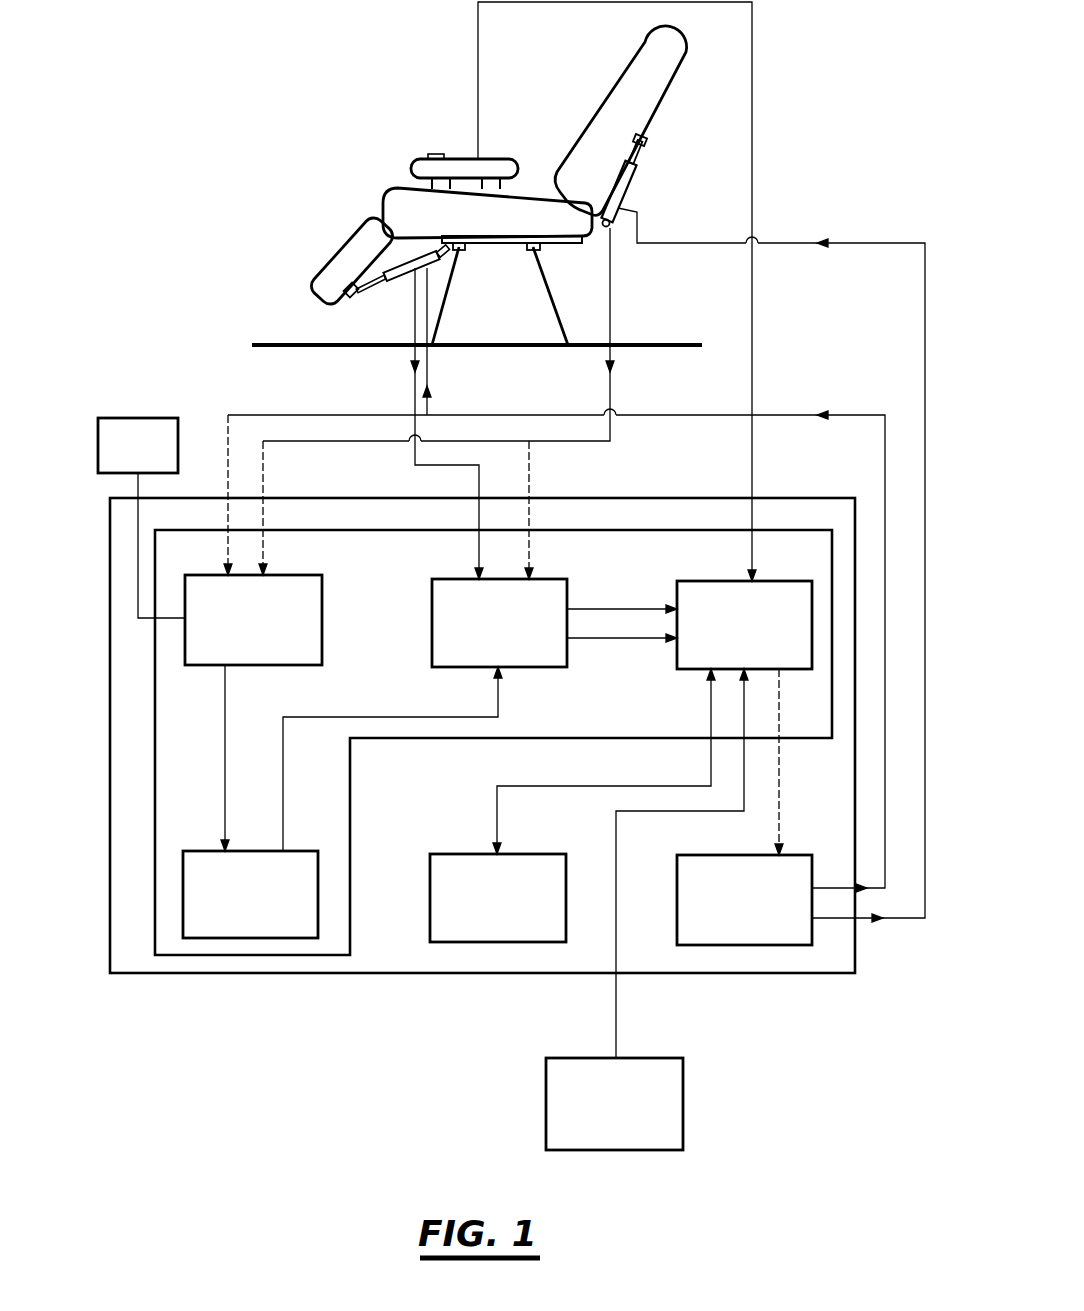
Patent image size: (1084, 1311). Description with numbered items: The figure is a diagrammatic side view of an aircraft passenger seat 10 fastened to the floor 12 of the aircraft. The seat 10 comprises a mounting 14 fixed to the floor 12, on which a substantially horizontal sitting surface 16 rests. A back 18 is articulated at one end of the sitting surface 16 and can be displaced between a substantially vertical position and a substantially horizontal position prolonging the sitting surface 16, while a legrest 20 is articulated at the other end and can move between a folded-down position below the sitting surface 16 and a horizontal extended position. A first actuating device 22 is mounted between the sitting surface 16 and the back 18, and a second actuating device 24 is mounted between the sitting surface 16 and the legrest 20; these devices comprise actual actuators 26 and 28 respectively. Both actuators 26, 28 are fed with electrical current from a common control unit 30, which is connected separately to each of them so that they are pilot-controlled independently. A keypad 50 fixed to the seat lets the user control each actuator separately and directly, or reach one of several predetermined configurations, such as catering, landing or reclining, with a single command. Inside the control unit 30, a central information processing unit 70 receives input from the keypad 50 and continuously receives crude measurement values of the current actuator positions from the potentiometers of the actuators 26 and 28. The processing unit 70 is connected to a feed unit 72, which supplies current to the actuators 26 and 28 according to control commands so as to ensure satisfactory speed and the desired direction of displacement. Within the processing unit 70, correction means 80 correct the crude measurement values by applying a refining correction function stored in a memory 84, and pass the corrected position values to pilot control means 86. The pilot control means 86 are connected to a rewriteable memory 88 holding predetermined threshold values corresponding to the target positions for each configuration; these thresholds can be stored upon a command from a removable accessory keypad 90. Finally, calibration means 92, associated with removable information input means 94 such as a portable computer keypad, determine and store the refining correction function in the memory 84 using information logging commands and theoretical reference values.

The seat 10 is at (355, 175).
The floor 12 is at (290, 340).
The mounting 14 is at (497, 326).
The sitting surface 16 is at (400, 203).
The back 18 is at (651, 64).
The legrest 20 is at (347, 253).
The first actuating device 22 is at (624, 237).
The second actuating device 24 is at (376, 305).
The actuator 26 is at (636, 180).
The actuator 28 is at (396, 284).
The control unit 30 is at (110, 760).
The keypad 50 is at (440, 157).
The central information processing unit 70 is at (490, 740).
The feed unit 72 is at (744, 900).
The correction means 80 is at (499, 623).
The memory 84 is at (250, 894).
The pilot control means 86 is at (744, 625).
The memory 88 is at (498, 898).
The removable accessory keypad 90 is at (614, 1104).
The calibration means 92 is at (253, 620).
The information input means 94 is at (138, 445).